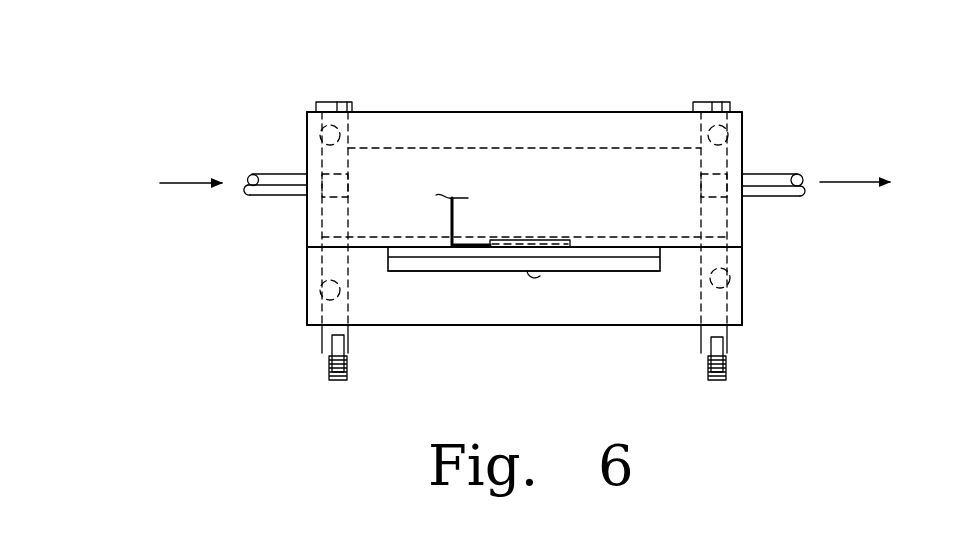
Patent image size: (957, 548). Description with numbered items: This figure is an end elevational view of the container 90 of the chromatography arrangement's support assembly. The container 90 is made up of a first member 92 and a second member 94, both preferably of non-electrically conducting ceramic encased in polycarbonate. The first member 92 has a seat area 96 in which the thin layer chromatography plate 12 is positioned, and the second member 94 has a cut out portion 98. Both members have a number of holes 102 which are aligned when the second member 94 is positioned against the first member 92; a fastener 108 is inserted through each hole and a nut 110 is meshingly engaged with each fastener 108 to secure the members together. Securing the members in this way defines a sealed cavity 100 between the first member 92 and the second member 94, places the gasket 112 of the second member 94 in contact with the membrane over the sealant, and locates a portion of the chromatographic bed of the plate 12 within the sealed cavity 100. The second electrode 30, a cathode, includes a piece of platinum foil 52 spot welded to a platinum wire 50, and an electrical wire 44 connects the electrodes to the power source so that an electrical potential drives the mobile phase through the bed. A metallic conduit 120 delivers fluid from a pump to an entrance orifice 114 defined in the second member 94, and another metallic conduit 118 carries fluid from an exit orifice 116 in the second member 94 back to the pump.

The container 90 is at (472, 84).
The second member 94 is at (368, 136).
The first member 92 is at (735, 298).
The second electrode 30 is at (567, 214).
The cut out portion 98 is at (536, 148).
The sealed cavity 100 is at (587, 148).
The holes 102 is at (322, 135).
The fastener 108 is at (333, 102).
The nut 110 is at (330, 338).
The metallic conduit 120 is at (270, 196).
The metallic conduit 118 is at (782, 174).
The entrance orifice 114 is at (350, 178).
The exit orifice 116 is at (700, 182).
The gasket 112 is at (375, 250).
The electrical wire 44 is at (450, 210).
The platinum wire 50 is at (536, 240).
The platinum foil 52 is at (607, 250).
The seat area 96 is at (536, 278).
The thin layer chromatography plate 12 is at (600, 272).